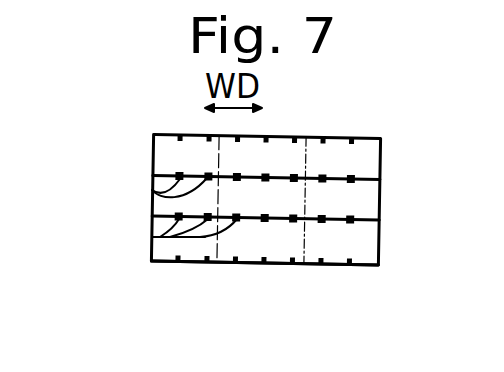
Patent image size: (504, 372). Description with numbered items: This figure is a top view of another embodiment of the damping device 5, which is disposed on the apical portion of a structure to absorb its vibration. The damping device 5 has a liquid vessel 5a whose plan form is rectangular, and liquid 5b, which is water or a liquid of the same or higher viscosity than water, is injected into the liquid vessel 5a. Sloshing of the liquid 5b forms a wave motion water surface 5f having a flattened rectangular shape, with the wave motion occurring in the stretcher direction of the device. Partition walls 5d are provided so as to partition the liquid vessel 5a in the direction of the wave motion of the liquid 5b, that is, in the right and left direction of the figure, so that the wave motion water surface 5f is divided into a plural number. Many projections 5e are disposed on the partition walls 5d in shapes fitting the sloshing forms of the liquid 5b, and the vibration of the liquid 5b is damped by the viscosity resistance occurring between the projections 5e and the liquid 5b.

The damping device 5 is at (100, 212).
The liquid vessel 5a is at (252, 264).
The liquid 5b is at (315, 166).
The partition wall 5d is at (366, 178).
The projection 5e is at (152, 190).
The wave motion water surface 5f is at (276, 139).